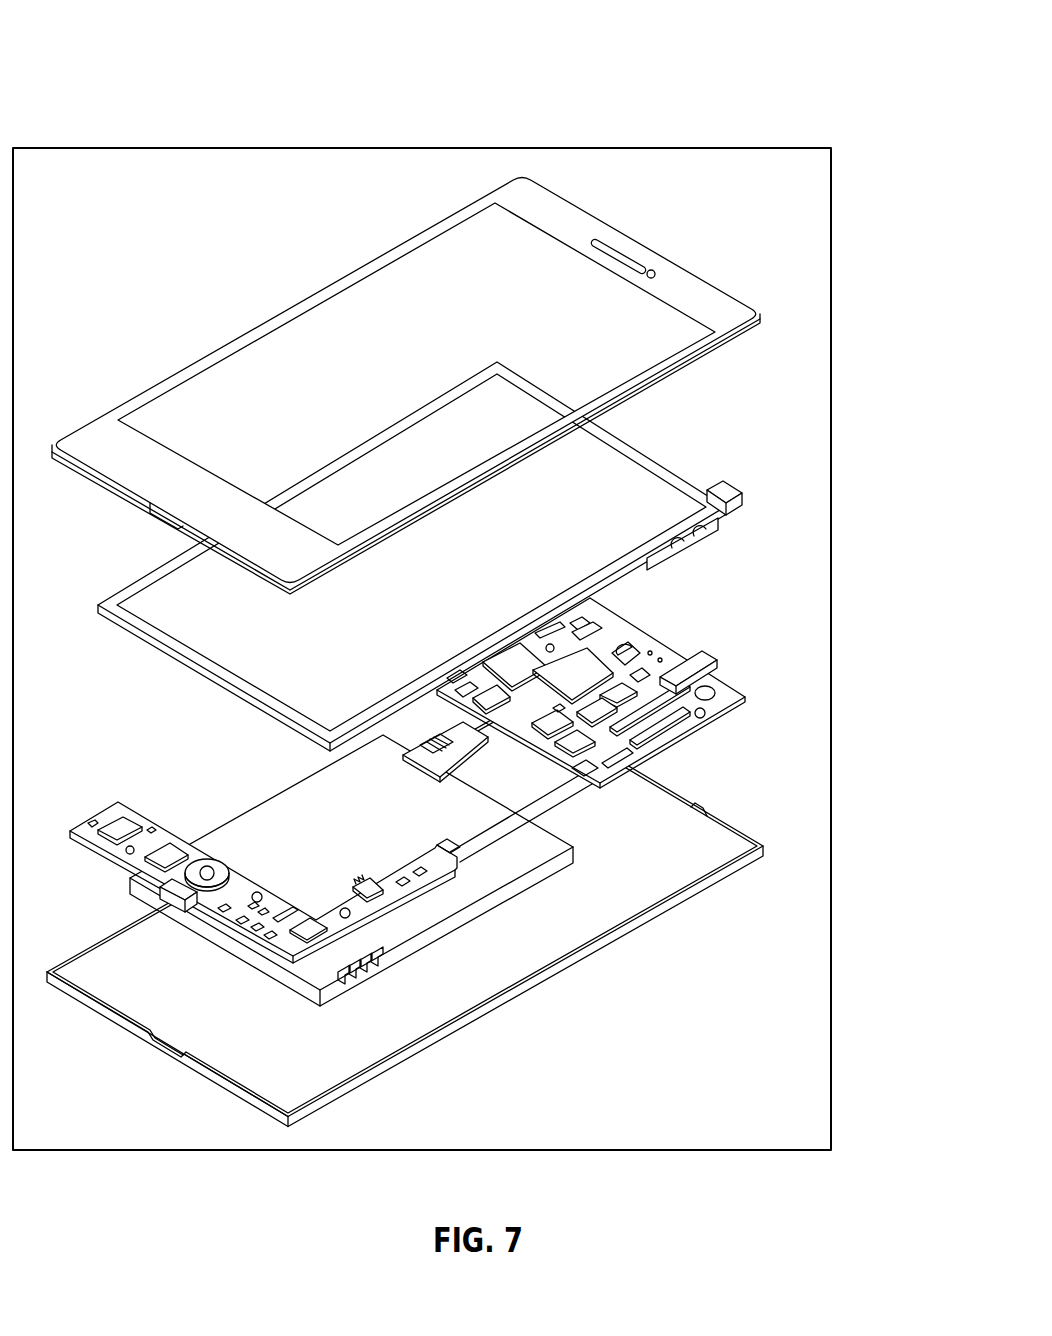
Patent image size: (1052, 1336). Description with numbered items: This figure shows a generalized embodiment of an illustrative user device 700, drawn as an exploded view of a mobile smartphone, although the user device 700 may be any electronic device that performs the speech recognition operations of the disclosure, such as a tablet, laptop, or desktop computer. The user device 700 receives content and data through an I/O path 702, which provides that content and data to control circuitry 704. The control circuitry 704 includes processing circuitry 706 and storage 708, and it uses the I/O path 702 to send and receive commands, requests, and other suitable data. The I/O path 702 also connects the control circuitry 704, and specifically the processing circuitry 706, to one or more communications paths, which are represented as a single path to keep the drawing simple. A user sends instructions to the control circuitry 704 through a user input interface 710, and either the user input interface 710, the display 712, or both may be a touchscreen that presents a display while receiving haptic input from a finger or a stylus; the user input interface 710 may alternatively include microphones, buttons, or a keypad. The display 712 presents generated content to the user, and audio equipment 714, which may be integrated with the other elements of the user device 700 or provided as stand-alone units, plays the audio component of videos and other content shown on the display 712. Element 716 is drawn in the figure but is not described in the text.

The user device 700 is at (183, 58).
The I/O path 702 is at (176, 888).
The control circuitry 704 is at (705, 730).
The processing circuitry 706 is at (669, 697).
The storage 708 is at (570, 676).
The user input interface 710 is at (610, 485).
The display 712 is at (698, 512).
The audio equipment 714 is at (626, 253).
The keyboard circuit board 716 is at (283, 942).